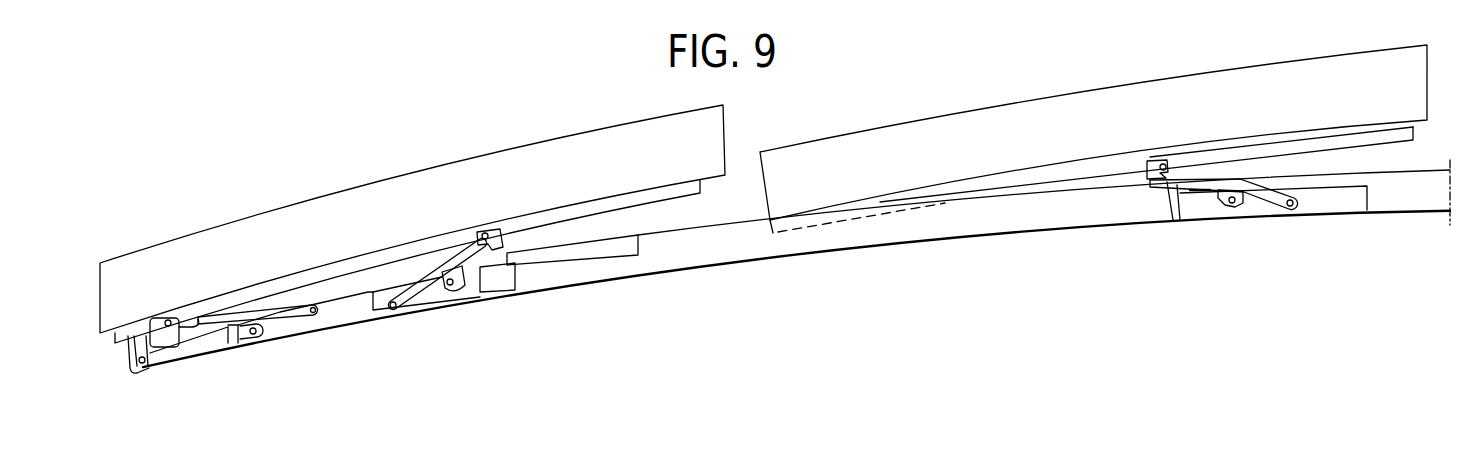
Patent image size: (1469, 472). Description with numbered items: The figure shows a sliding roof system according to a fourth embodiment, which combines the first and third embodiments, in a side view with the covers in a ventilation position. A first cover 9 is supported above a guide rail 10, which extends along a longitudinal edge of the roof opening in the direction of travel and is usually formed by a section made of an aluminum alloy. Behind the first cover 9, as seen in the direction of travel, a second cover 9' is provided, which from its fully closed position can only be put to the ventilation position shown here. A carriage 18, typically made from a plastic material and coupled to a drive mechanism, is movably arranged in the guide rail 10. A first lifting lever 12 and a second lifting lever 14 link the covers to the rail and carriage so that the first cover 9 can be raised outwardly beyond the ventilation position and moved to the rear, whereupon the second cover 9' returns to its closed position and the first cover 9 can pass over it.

The cover 9 is at (412, 224).
The second cover 9' is at (1093, 131).
The guide rail 10 is at (1405, 213).
The first lifting lever 12 is at (222, 323).
The second lifting lever 14 is at (467, 257).
The carriage 18 is at (442, 293).